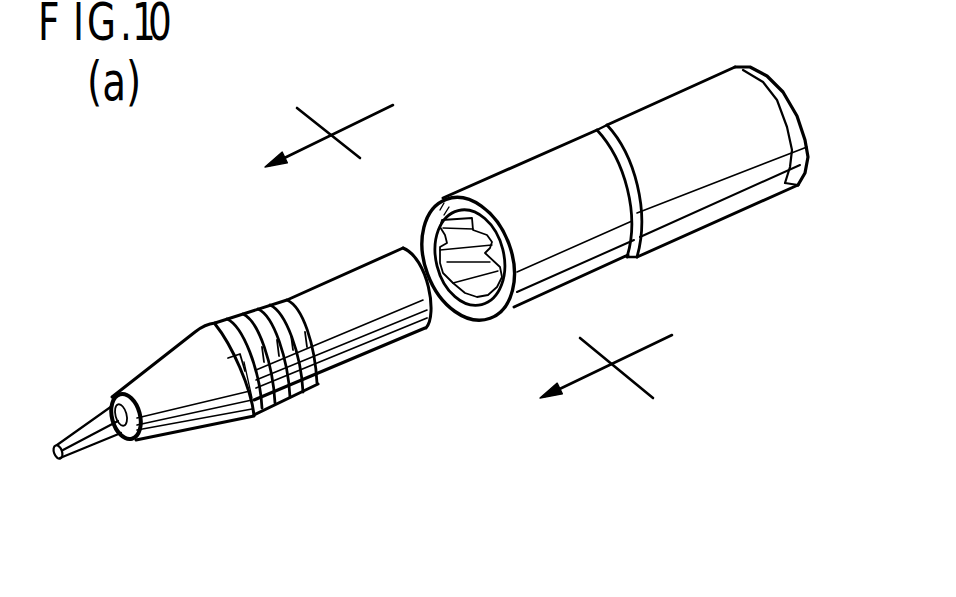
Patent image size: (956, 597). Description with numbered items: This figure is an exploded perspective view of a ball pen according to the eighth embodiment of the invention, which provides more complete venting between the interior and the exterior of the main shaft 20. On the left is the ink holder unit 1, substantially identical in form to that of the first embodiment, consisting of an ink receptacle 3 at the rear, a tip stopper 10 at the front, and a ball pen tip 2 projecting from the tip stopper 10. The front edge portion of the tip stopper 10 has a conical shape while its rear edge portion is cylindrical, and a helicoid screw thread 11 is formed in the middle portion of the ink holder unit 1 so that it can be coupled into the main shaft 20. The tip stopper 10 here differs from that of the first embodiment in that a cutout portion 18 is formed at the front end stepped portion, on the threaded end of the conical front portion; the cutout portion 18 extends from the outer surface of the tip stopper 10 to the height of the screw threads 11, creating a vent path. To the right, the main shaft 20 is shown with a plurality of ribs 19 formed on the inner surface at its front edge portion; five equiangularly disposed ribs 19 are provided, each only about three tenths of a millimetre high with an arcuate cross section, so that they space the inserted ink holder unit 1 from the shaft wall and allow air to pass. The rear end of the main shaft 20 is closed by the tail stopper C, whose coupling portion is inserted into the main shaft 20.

The ink holder unit 1 is at (345, 280).
The ball pen tip 2 is at (108, 427).
The ink receptacle 3 is at (357, 313).
The tip stopper 10 is at (213, 395).
The helicoid screw thread 11 is at (303, 373).
The cutout portion 18 is at (253, 417).
The ribs 19 is at (487, 293).
The main shaft 20 is at (540, 180).
The tail stopper C is at (773, 75).